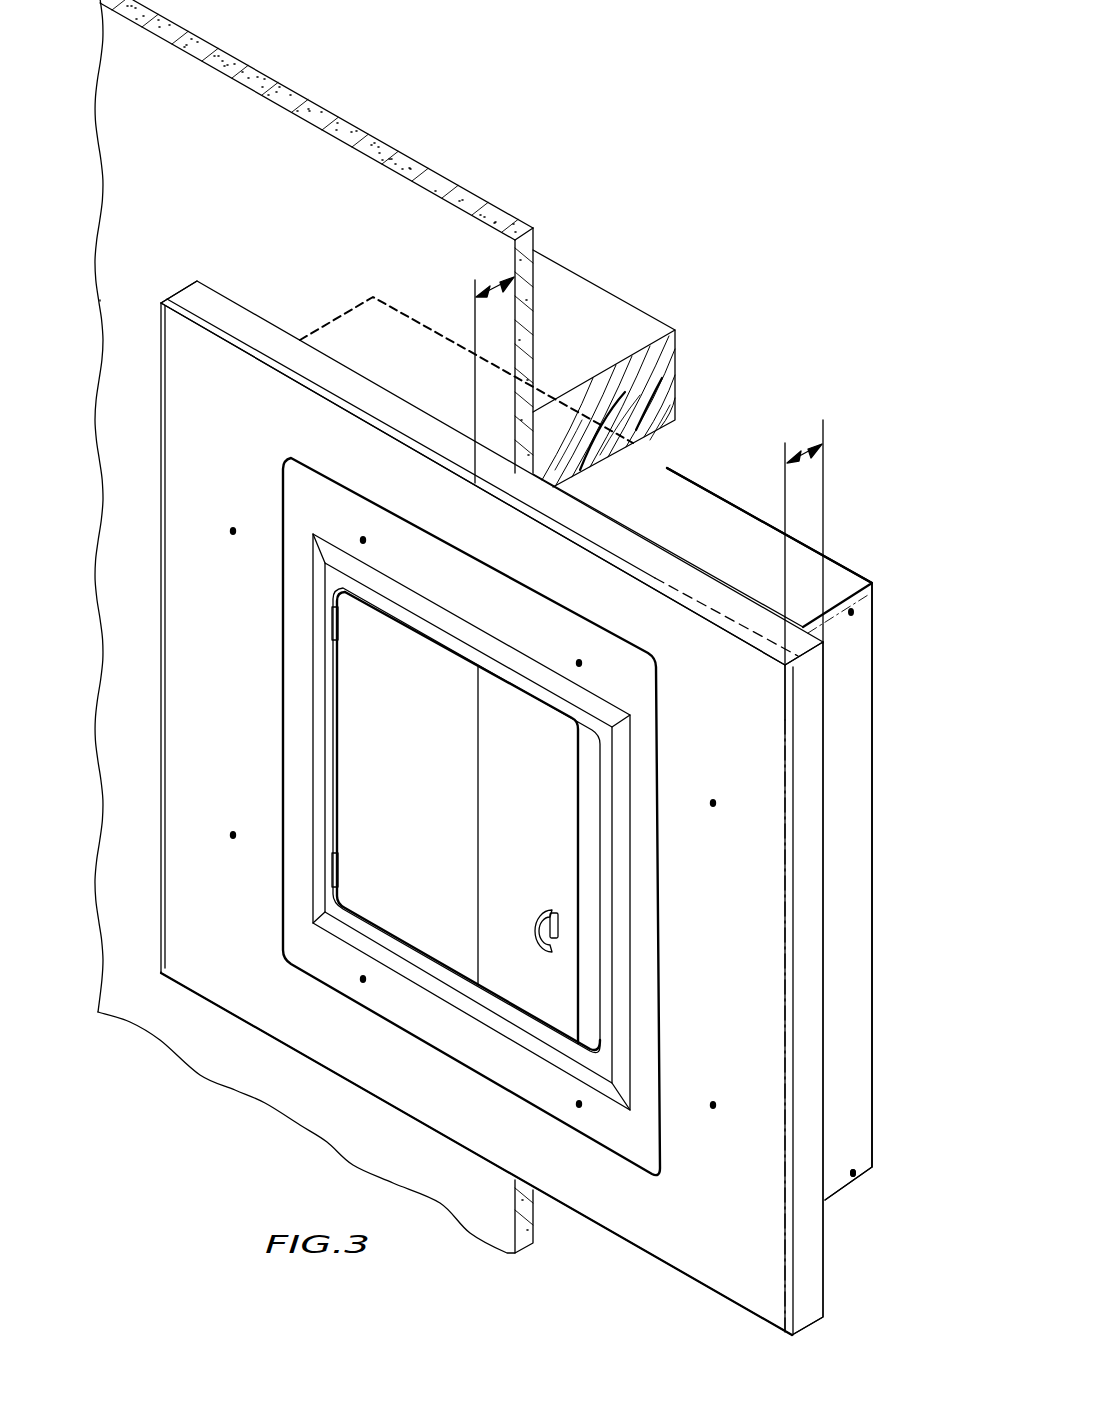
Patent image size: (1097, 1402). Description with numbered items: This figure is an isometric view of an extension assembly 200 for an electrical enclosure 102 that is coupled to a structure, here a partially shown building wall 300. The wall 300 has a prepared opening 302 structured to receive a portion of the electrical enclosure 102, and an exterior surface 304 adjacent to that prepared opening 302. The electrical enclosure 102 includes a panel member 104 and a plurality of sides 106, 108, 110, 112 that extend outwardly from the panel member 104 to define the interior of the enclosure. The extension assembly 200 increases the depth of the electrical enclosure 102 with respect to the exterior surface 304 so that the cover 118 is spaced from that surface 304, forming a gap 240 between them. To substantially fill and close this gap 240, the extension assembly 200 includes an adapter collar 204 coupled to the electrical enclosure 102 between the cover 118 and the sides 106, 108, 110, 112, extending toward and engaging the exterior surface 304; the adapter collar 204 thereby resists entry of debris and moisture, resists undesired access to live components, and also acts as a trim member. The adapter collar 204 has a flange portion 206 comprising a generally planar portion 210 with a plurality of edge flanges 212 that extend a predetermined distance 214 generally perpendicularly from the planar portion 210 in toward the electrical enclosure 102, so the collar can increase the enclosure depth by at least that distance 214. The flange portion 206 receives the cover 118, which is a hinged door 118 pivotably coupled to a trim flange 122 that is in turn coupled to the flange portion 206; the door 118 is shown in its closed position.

The building wall 300 is at (123, 128).
The exterior surface 304 is at (106, 553).
The prepared opening 302 is at (628, 463).
The gap 240 is at (505, 280).
The adapter collar 204 is at (157, 399).
The edge flanges 212 is at (191, 290).
The generally planar portion 210 is at (701, 748).
The electrical enclosure 102 is at (878, 778).
The panel member 104 is at (735, 503).
The side 110 is at (723, 566).
The side 108 is at (829, 853).
The side 106 is at (333, 330).
The predetermined distance 214 is at (797, 452).
The flange portion 206 is at (826, 960).
The side 112 is at (856, 1186).
The extension assembly 200 is at (834, 1235).
The trim flange 122 is at (628, 1152).
The cover 118 is at (371, 786).